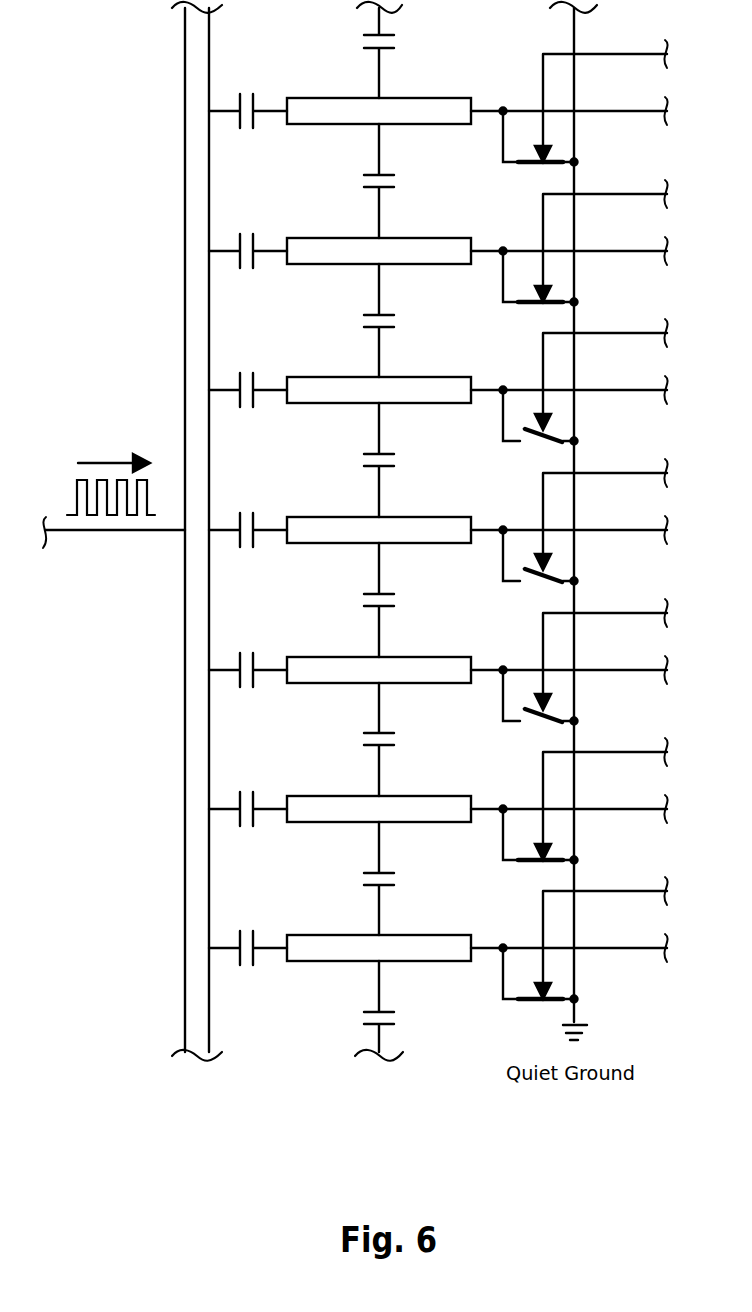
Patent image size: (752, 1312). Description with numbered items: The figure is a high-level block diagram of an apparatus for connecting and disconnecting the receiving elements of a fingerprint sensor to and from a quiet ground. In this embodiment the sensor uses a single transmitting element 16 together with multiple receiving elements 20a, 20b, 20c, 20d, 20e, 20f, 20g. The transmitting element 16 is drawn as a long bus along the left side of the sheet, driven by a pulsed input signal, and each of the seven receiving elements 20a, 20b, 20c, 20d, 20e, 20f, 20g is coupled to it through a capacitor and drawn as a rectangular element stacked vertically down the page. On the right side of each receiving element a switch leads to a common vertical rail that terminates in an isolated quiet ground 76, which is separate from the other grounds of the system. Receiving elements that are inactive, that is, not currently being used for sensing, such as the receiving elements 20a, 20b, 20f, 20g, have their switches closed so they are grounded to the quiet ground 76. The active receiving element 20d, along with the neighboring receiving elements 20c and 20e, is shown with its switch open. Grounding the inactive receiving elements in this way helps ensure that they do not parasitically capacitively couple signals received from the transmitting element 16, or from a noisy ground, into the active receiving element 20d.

The transmitting element 16 is at (196, 318).
The receiving element 20a is at (432, 112).
The receiving element 20b is at (432, 252).
The receiving element 20c is at (432, 391).
The receiving element 20d is at (432, 531).
The receiving element 20e is at (432, 671).
The receiving element 20f is at (432, 810).
The receiving element 20g is at (432, 949).
The quiet ground 76 is at (583, 1011).